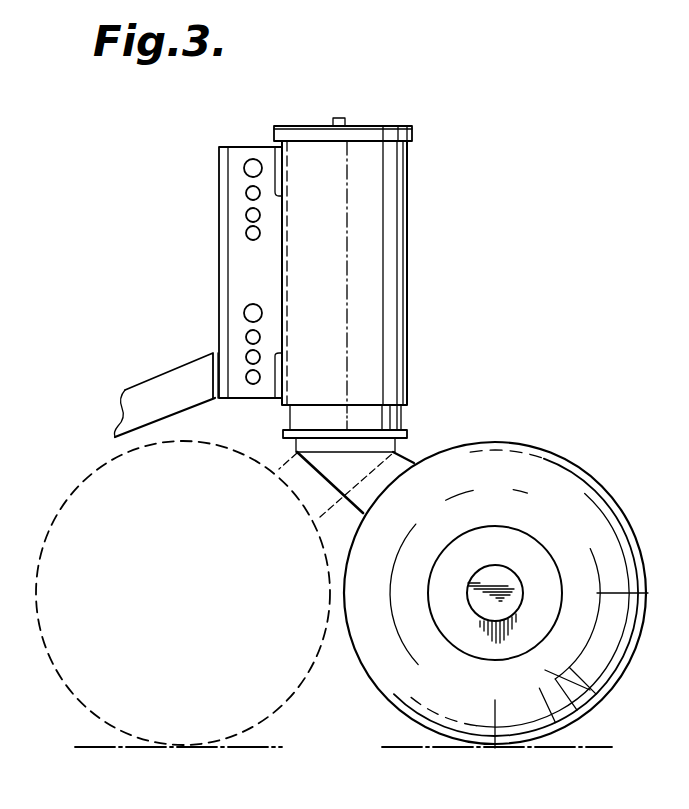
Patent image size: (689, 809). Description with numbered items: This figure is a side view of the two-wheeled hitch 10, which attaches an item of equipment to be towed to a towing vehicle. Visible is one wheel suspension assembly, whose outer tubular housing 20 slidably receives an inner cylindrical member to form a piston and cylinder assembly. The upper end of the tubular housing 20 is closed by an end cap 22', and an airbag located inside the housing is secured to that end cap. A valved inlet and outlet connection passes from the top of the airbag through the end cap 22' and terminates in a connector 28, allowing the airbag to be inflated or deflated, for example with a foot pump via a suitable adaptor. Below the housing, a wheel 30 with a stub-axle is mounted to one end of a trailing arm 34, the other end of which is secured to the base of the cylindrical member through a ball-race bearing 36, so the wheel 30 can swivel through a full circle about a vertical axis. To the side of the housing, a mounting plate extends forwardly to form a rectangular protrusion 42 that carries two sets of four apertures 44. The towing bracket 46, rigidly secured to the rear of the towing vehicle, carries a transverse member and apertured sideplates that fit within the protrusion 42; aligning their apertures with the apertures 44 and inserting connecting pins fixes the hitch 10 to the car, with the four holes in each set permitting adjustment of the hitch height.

The two-wheeled hitch 10 is at (430, 384).
The outer tubular housing 20 is at (397, 240).
The end cap 22' is at (377, 118).
The connector 28 is at (343, 118).
The wheel 30 is at (560, 471).
The trailing arm 34 is at (414, 460).
The ball-race bearing 36 is at (292, 417).
The rectangular protrusions 42 is at (247, 147).
The apertures 44 is at (246, 233).
The towing bracket 46 is at (125, 390).